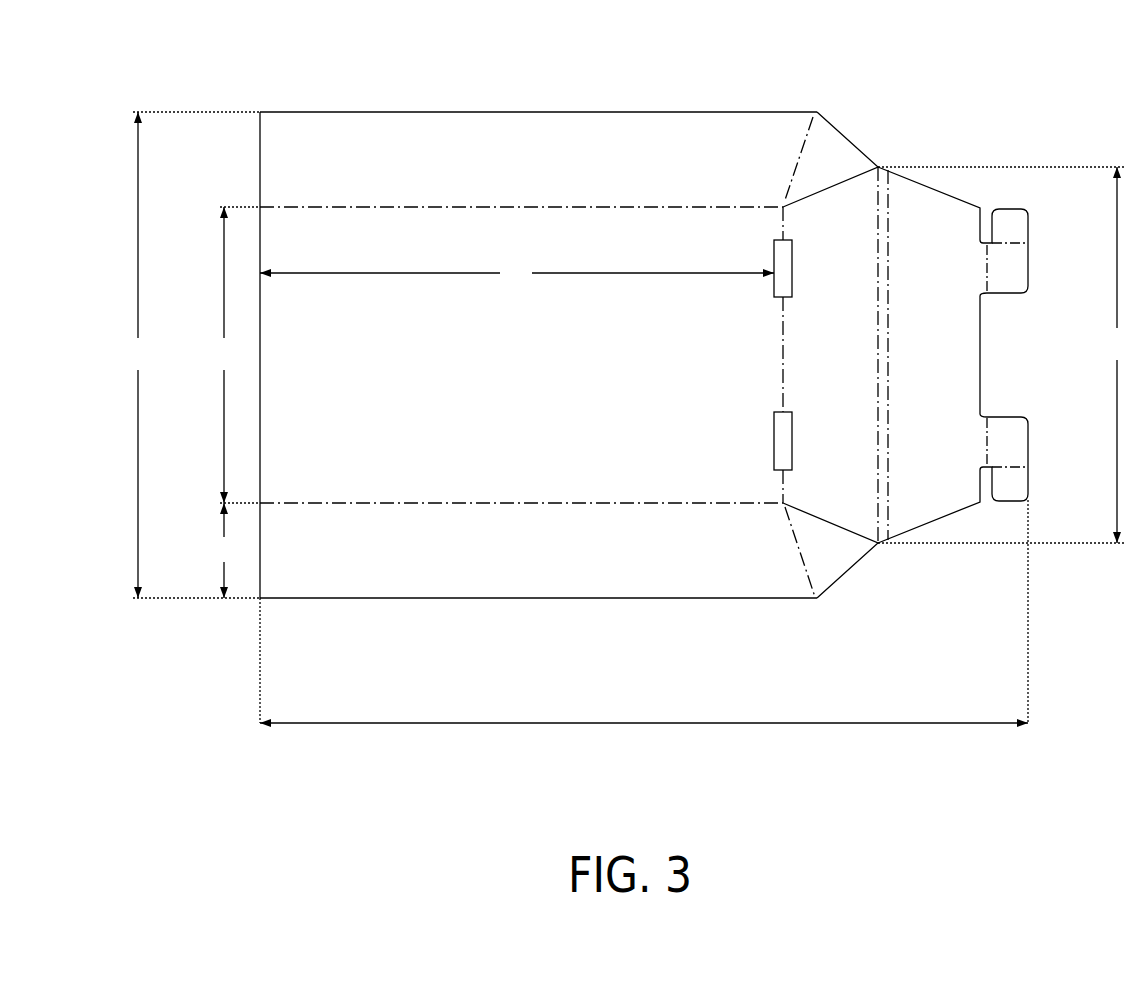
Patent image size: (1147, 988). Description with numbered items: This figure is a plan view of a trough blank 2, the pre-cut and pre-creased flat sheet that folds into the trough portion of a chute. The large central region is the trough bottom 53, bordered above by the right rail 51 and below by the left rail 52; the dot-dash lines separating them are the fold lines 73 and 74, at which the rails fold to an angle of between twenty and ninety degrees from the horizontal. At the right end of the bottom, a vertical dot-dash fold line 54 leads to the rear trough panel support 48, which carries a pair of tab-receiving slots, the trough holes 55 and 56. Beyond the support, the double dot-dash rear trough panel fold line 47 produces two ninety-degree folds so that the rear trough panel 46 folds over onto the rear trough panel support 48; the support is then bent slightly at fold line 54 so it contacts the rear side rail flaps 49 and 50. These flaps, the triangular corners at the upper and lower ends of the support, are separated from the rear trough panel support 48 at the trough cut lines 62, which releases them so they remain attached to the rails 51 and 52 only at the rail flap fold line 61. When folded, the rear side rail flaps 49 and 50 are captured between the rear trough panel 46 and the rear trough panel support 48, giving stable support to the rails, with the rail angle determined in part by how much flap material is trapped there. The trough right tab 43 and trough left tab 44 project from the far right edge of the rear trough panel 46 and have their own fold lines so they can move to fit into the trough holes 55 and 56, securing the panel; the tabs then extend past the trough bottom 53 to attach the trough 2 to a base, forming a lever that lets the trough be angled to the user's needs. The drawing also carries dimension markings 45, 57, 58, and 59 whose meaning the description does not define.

The trough blank 2 is at (120, 106).
The trough right tab 43 is at (1017, 222).
The trough left tab 44 is at (1013, 490).
The end panel height dimension 45 is at (1117, 355).
The rear trough panel 46 is at (917, 503).
The rear trough panel fold line 47 is at (880, 533).
The rear trough panel support 48 is at (852, 217).
The rear side rail flap 49 is at (830, 147).
The rear side rail flap 50 is at (830, 586).
The right rail 51 is at (320, 150).
The left rail 52 is at (298, 570).
The trough bottom 53 is at (427, 462).
The fold line 54 is at (783, 378).
The trough hole 55 is at (777, 453).
The trough hole 56 is at (773, 242).
The panel length dimension 57 is at (517, 273).
The panel inner height dimension 58 is at (224, 402).
The blank height dimension 59 is at (138, 355).
The rail flap fold line 61 is at (805, 143).
The trough cut line 62 is at (847, 180).
The fold line 73 is at (535, 205).
The fold line 74 is at (530, 503).